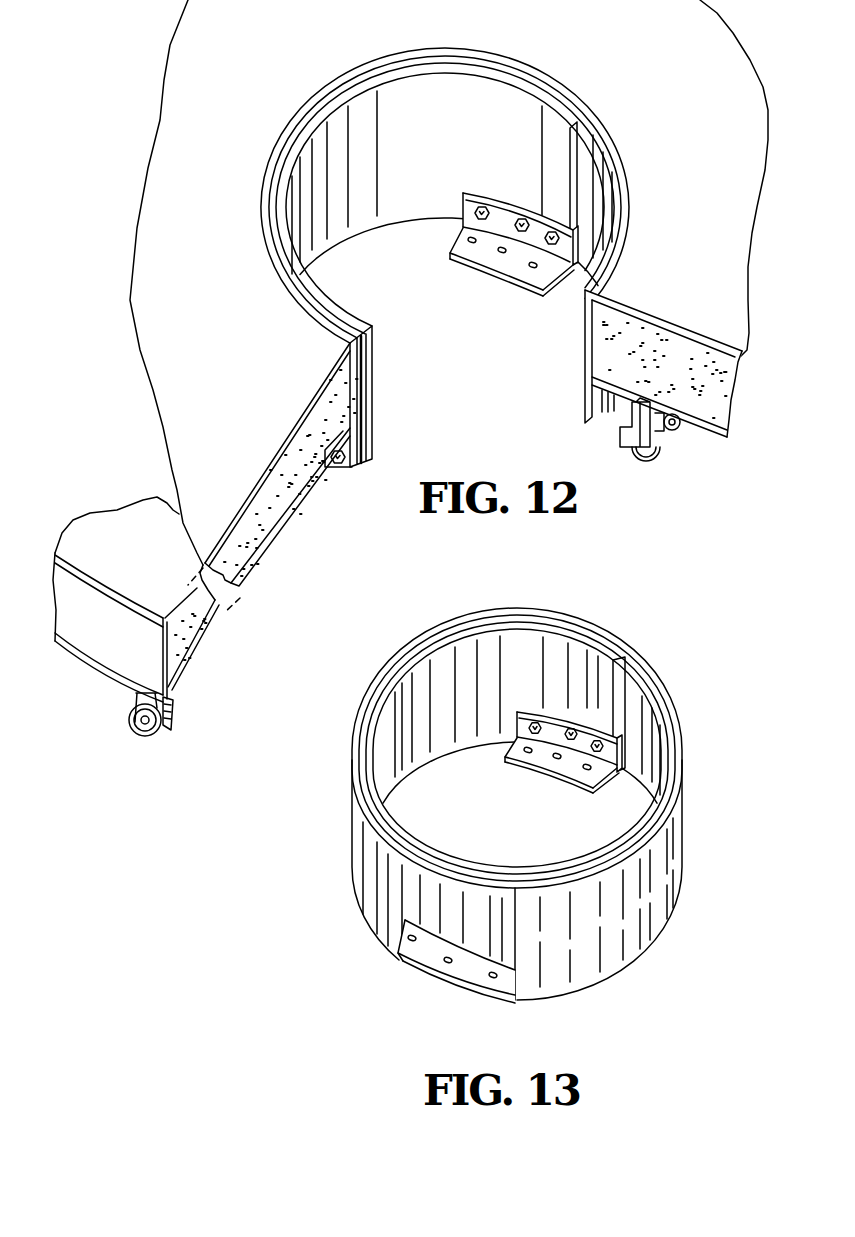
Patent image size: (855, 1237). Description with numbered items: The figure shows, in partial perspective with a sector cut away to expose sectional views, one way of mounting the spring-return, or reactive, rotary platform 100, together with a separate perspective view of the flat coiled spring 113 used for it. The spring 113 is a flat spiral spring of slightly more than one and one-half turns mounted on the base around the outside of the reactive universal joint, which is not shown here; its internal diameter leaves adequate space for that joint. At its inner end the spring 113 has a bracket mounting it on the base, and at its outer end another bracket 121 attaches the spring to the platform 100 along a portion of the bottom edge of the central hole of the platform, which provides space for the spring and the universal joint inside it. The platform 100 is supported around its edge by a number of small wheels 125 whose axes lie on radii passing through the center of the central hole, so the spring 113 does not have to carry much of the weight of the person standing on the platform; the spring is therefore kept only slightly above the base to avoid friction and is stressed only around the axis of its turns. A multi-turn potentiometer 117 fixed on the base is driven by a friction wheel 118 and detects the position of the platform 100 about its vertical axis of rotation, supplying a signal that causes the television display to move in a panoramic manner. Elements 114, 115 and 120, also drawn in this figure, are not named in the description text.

In FIG. 12, the platform 100 is at (680, 234).
In FIG. 12, the flat spiral spring 113 is at (373, 362).
In FIG. 13, the flat spiral spring 113 is at (522, 1001).
In FIG. 12, the frame panel 114 is at (733, 376).
In FIG. 12, the frame bottom flange 115 is at (727, 430).
In FIG. 12, the multi-turn potentiometer 117 is at (652, 453).
In FIG. 12, the friction wheel 118 is at (676, 428).
In FIG. 12, the angle connector plate 120 is at (455, 251).
In FIG. 13, the angle connector plate 120 is at (543, 768).
In FIG. 12, the bracket 121 is at (340, 466).
In FIG. 13, the bracket 121 is at (404, 922).
In FIG. 12, the small wheels 125 is at (174, 717).